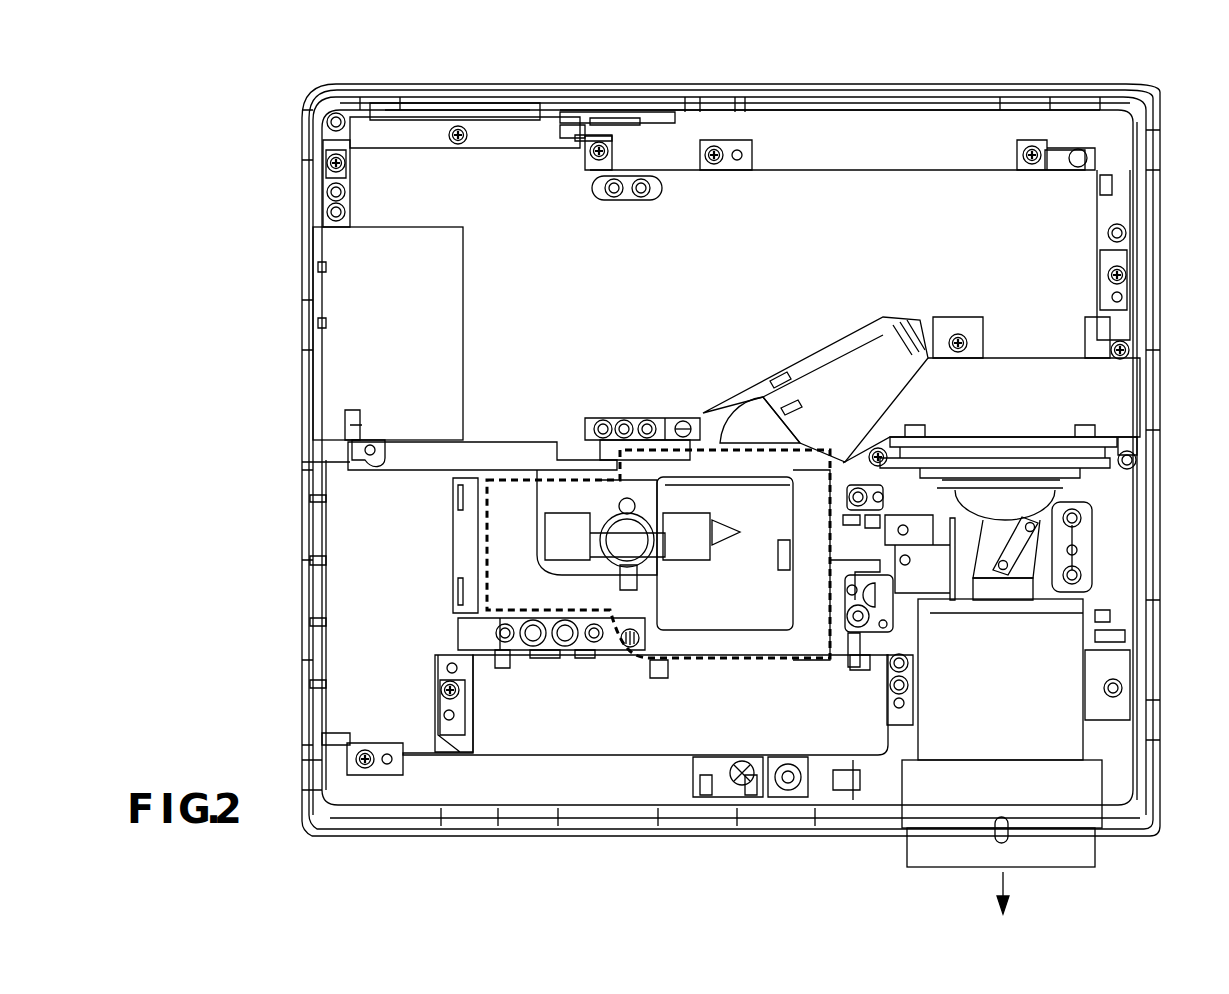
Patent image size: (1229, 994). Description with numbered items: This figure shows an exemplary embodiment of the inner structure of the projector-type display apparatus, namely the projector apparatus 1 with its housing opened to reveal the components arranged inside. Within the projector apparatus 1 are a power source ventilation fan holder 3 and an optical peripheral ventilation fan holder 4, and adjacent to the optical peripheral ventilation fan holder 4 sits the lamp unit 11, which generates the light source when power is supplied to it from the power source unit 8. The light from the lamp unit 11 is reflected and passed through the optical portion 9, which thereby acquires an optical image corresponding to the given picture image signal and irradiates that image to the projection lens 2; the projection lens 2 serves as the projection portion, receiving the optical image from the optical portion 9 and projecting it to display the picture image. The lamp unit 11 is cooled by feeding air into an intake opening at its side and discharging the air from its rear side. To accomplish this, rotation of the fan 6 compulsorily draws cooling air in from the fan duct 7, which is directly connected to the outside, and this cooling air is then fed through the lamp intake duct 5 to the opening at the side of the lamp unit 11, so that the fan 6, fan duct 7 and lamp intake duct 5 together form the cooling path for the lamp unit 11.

The projector apparatus 1 is at (748, 82).
The projection lens 2 is at (968, 840).
The power source ventilation fan holder 3 is at (335, 362).
The optical peripheral ventilation fan holder 4 is at (340, 642).
The lamp intake duct 5 is at (742, 412).
The fan 6 is at (839, 385).
The fan duct 7 is at (1115, 412).
The power source unit 8 is at (772, 725).
The optical portion 9 is at (1115, 548).
The lamp unit 11 is at (618, 668).